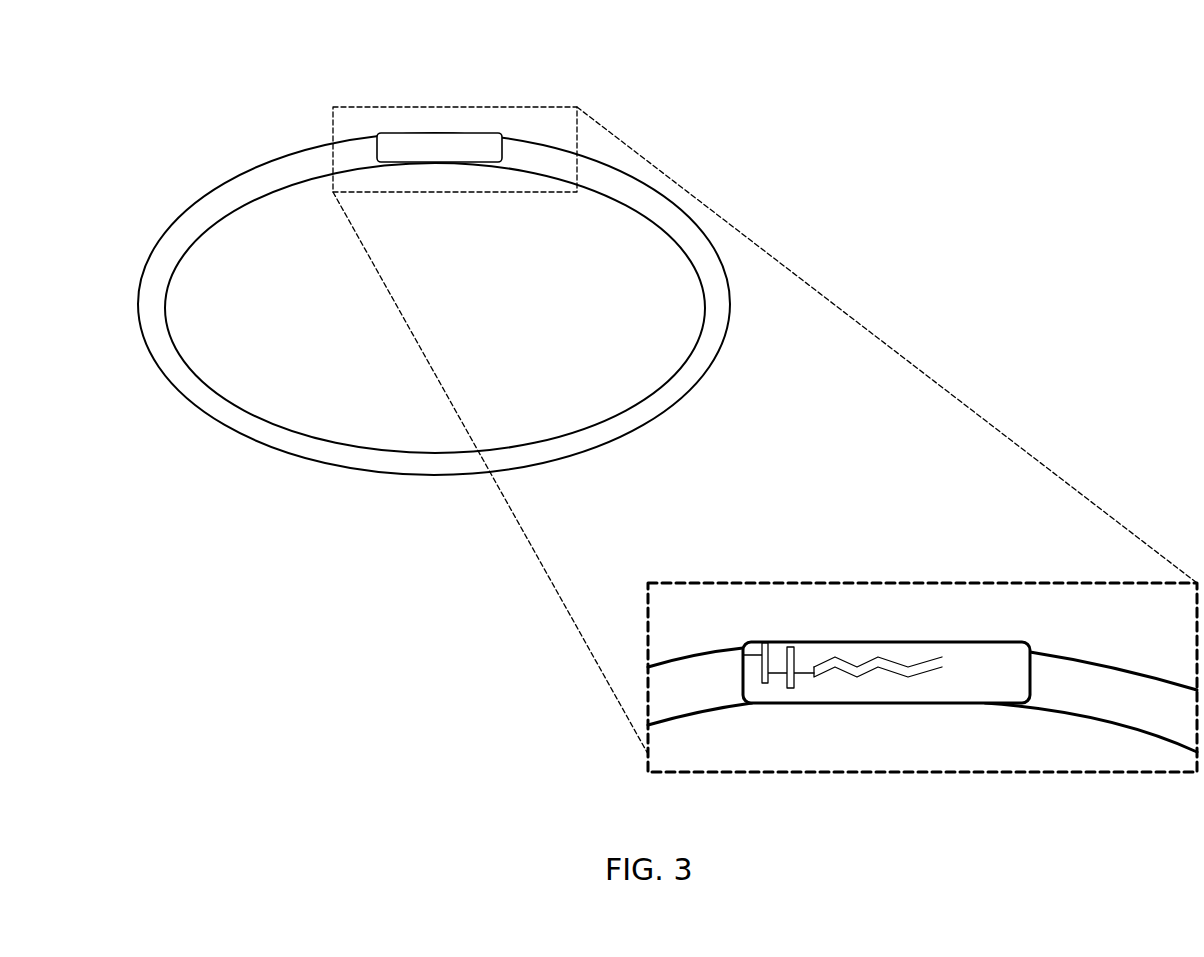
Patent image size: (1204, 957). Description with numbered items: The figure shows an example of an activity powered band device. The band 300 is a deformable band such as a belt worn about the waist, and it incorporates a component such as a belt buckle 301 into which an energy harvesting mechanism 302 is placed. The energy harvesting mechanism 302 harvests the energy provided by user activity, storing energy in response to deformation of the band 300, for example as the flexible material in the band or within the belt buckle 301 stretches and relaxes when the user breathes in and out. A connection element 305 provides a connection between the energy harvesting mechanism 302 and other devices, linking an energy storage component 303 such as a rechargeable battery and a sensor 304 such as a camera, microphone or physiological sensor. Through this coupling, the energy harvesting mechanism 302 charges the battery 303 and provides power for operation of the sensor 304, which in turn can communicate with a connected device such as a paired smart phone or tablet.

The band 300 is at (270, 133).
The belt buckle 301 is at (1000, 669).
The energy harvesting mechanism 302 is at (881, 656).
The energy storage component 303 is at (799, 641).
The sensor 304 is at (762, 641).
The connection element 305 is at (740, 650).